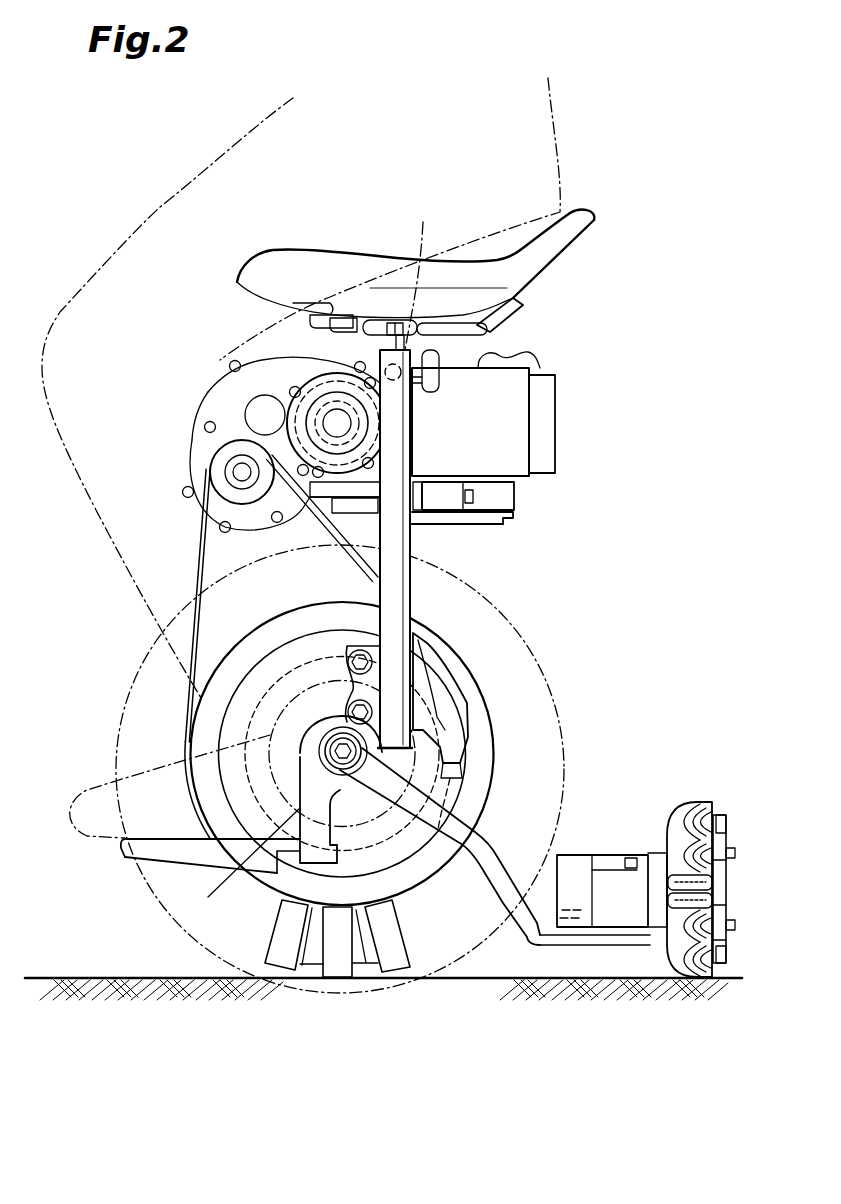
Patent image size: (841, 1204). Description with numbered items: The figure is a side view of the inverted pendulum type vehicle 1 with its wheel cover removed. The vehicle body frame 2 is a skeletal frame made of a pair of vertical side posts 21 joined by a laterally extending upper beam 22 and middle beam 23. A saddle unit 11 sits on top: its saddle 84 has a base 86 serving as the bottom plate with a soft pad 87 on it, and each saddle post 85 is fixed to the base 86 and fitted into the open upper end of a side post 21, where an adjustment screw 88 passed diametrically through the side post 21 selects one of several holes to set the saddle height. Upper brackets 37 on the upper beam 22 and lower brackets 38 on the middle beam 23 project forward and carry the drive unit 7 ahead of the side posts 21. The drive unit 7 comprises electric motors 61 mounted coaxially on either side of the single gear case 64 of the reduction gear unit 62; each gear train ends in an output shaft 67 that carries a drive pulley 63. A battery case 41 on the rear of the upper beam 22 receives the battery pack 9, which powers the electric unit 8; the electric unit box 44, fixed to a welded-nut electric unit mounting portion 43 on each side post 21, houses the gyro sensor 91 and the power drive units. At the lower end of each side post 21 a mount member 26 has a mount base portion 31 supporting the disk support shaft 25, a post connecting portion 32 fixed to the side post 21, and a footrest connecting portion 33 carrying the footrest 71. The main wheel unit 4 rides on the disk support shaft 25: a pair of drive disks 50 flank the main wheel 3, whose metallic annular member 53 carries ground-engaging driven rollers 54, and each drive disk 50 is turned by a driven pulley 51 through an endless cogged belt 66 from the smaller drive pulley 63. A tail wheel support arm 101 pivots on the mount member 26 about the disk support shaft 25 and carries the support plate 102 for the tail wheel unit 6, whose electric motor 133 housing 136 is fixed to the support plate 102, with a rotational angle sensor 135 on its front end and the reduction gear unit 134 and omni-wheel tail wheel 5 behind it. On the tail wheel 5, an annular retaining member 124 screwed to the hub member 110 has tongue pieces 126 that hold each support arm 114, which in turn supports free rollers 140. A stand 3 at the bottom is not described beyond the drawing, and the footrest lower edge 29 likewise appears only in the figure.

The inverted pendulum type vehicle 1 is at (639, 179).
The vehicle body frame 2 is at (414, 567).
The main wheel 3 is at (345, 980).
The main wheel unit 4 is at (542, 628).
The tail wheel 5 is at (729, 847).
The tail wheel unit 6 is at (674, 888).
The drive unit 7 is at (254, 416).
The electric unit 8 is at (522, 510).
The battery pack 9 is at (545, 435).
The saddle unit 11 is at (451, 228).
The side post 21 is at (395, 587).
The upper beam 22 is at (423, 275).
The middle beam 23 is at (360, 548).
The disk support shaft 25 is at (325, 740).
The mount member 26 is at (297, 760).
The footboard lower edge 29 is at (167, 862).
The mount base portion 31 is at (298, 748).
The post connecting portion 32 is at (340, 655).
The footrest connecting portion 33 is at (306, 905).
The upper bracket 37 is at (378, 390).
The lower bracket 38 is at (313, 518).
The battery case 41 is at (515, 390).
The electric unit mounting portion 43 is at (415, 490).
The electric unit box 44 is at (505, 490).
The drive disk 50 is at (447, 793).
The driven pulley 51 is at (468, 700).
The annular member 53 is at (362, 963).
The driven roller 54 is at (338, 968).
The electric motor 61 is at (335, 420).
The reduction gear unit 62 is at (195, 435).
The drive pulley 63 is at (228, 472).
The gear case 64 is at (265, 367).
The cogged belt 66 is at (203, 548).
The output shaft 67 is at (203, 413).
The footrest 71 is at (162, 860).
The saddle 84 is at (583, 209).
The saddle post 85 is at (372, 335).
The base 86 is at (487, 330).
The soft pad 87 is at (537, 259).
The adjustment screw 88 is at (440, 375).
The gyro sensor 91 is at (480, 523).
The tail wheel support arm 101 is at (470, 853).
The support plate 102 is at (543, 942).
The hub member 110 is at (728, 928).
The support arm 114 is at (707, 980).
The annular retaining member 124 is at (718, 890).
The tongue piece 126 is at (720, 842).
The electric motor 133 is at (622, 905).
The reduction gear unit 134 is at (663, 925).
The rotational angle sensor 135 is at (573, 905).
The housing 136 is at (610, 870).
The free roller 140 is at (690, 805).